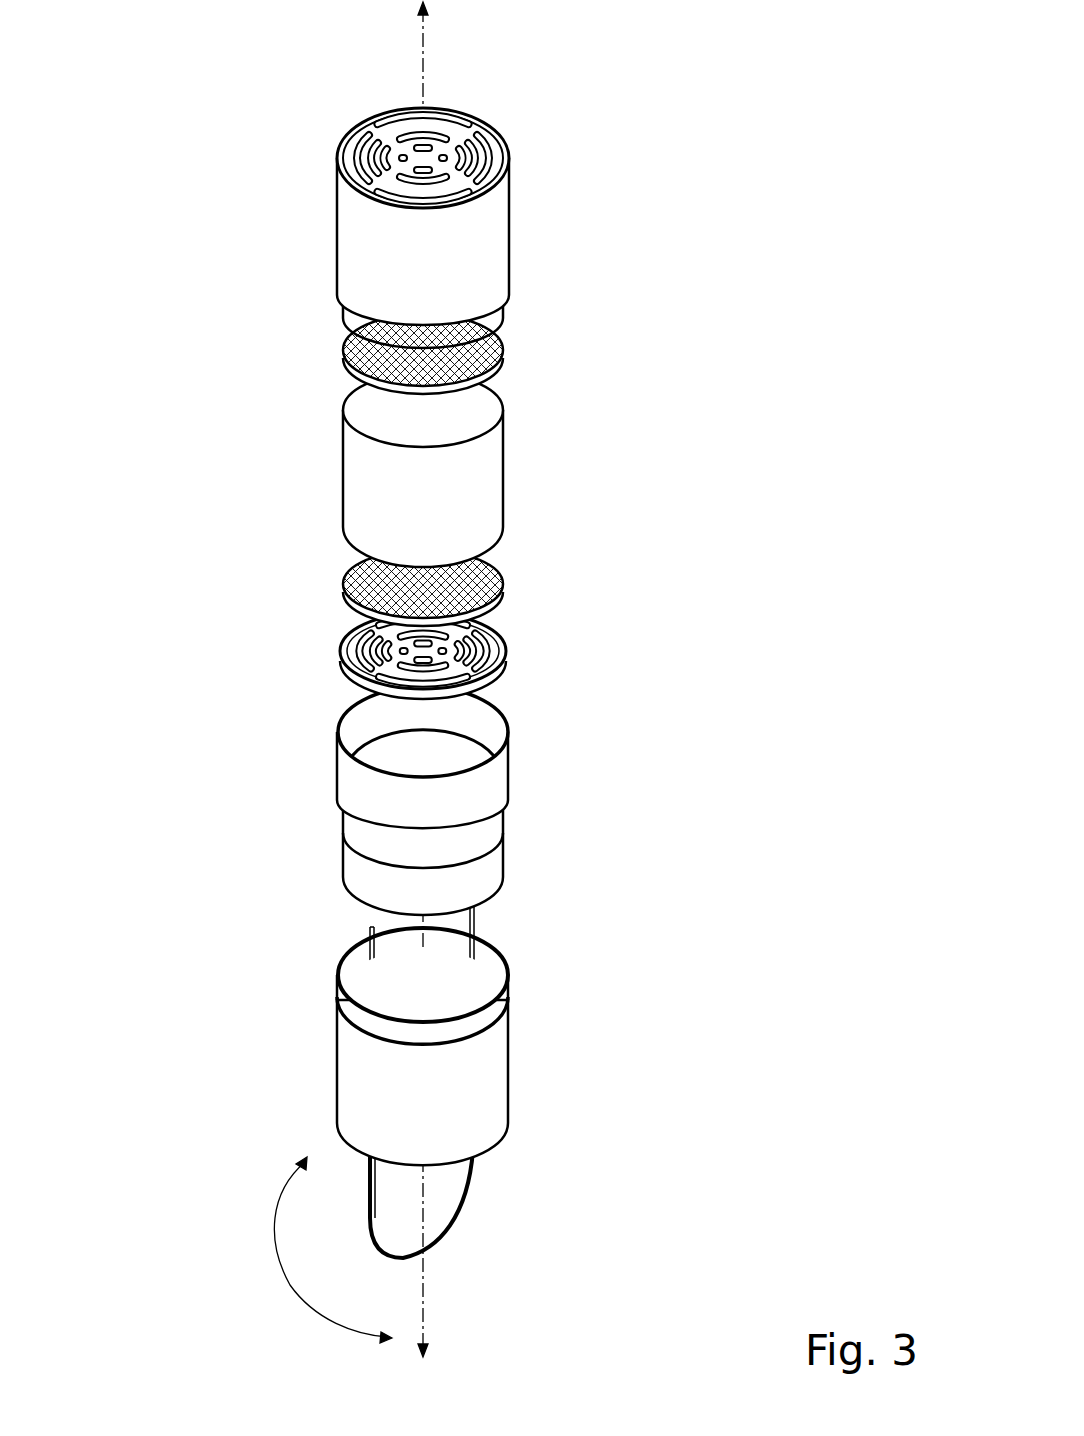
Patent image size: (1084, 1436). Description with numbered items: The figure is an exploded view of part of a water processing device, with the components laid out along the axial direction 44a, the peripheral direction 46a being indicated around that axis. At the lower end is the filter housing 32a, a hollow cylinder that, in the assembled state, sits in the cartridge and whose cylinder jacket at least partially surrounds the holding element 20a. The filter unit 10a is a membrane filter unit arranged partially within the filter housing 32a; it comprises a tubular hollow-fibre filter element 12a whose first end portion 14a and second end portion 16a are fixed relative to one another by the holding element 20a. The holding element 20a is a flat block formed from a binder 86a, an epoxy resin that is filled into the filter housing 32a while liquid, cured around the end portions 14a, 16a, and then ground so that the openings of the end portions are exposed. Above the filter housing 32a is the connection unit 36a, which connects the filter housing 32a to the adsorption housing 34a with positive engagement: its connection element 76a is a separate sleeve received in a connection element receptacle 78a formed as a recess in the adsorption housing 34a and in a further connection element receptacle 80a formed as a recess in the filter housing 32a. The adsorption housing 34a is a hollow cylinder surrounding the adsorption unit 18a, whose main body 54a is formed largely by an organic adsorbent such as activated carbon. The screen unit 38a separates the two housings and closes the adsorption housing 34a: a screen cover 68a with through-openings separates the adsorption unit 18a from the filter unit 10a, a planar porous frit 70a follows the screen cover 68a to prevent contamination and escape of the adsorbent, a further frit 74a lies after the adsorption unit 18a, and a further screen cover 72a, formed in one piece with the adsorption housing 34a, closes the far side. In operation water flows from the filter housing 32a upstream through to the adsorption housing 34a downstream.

The filter unit 10a is at (375, 679).
The filter element 12a is at (455, 1205).
The first end portion 14a is at (480, 922).
The second end portion 16a is at (366, 931).
The adsorption unit 18a is at (497, 470).
The holding element 20a is at (427, 801).
The filter housing 32a is at (509, 1050).
The adsorption housing 34a is at (494, 216).
The connection unit 36a is at (388, 627).
The screen unit 38a is at (388, 251).
The axial direction 44a is at (423, 103).
The peripheral direction 46a is at (285, 1272).
The main body 54a is at (503, 432).
The screen cover 68a is at (483, 665).
The frit 70a is at (478, 576).
The further screen cover 72a is at (470, 122).
The further frit 74a is at (478, 352).
The connection element 76a is at (352, 770).
The connection element receptacle 78a is at (343, 308).
The further connection element receptacle 80a is at (338, 981).
The binder 86a is at (478, 830).